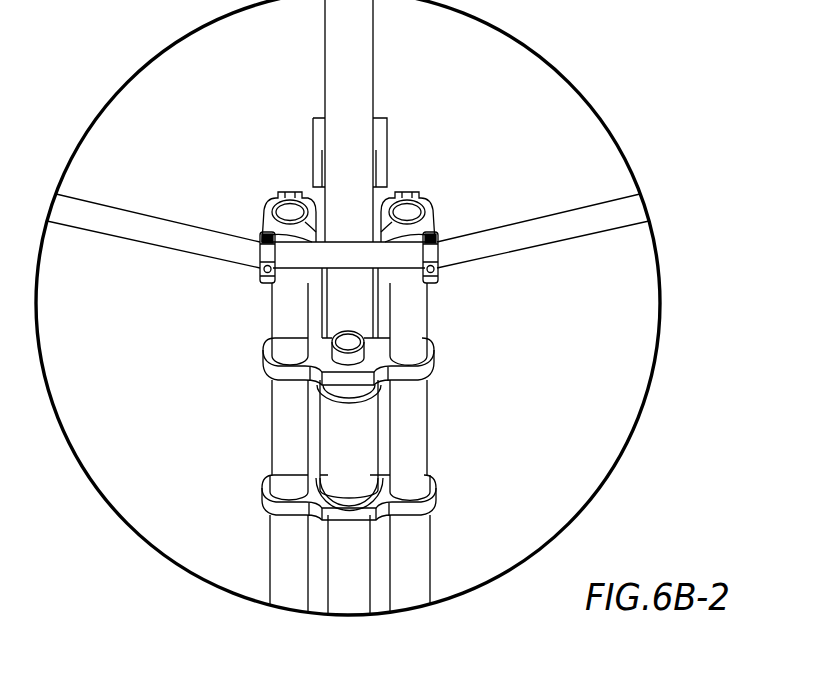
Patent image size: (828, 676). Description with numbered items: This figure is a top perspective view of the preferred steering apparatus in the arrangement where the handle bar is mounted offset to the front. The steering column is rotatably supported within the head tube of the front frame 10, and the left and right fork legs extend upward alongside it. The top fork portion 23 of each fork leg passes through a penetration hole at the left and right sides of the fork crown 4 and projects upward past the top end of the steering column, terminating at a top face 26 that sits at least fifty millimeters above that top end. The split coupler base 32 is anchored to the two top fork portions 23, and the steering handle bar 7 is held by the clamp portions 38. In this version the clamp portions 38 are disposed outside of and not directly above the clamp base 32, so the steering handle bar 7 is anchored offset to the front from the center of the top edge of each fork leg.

The front frame 10 is at (375, 90).
The steering handle bar 7 is at (188, 230).
The split coupler base 32 is at (277, 196).
The top face 26 is at (272, 212).
The top clamp portion 38 is at (262, 252).
The top fork portion 23 is at (282, 321).
The fork crown 4 is at (437, 366).